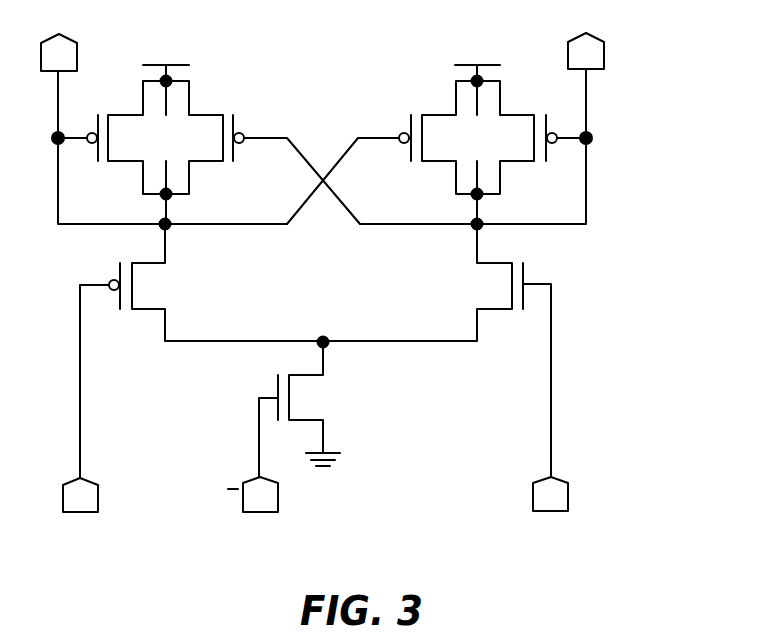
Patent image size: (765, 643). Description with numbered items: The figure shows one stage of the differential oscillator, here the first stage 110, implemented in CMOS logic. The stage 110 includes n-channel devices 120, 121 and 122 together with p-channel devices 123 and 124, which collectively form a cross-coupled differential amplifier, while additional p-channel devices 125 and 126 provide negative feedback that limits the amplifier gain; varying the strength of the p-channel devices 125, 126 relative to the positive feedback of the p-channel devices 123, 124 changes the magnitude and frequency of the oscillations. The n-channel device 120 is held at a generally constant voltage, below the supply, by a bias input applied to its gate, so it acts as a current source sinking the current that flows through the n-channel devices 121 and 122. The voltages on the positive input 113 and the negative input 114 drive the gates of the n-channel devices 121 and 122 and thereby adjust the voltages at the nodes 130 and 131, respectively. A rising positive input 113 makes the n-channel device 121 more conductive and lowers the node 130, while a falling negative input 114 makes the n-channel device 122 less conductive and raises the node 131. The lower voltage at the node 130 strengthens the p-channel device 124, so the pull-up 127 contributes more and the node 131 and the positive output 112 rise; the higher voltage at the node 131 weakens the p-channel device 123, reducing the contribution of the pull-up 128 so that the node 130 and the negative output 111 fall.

The first stage 110 is at (744, 146).
The negative output 111 is at (58, 114).
The positive output 112 is at (622, 113).
The positive input 113 is at (80, 363).
The negative input 114 is at (551, 363).
The n-channel device 120 is at (284, 437).
The n-channel device 121 is at (216, 282).
The n-channel device 122 is at (423, 282).
The p-channel device 123 is at (203, 138).
The p-channel device 124 is at (438, 137).
The p-channel device 125 is at (126, 137).
The p-channel device 126 is at (515, 138).
The pull-up 127 is at (464, 65).
The pull-up 128 is at (181, 65).
The node 130 is at (162, 224).
The node 131 is at (482, 221).